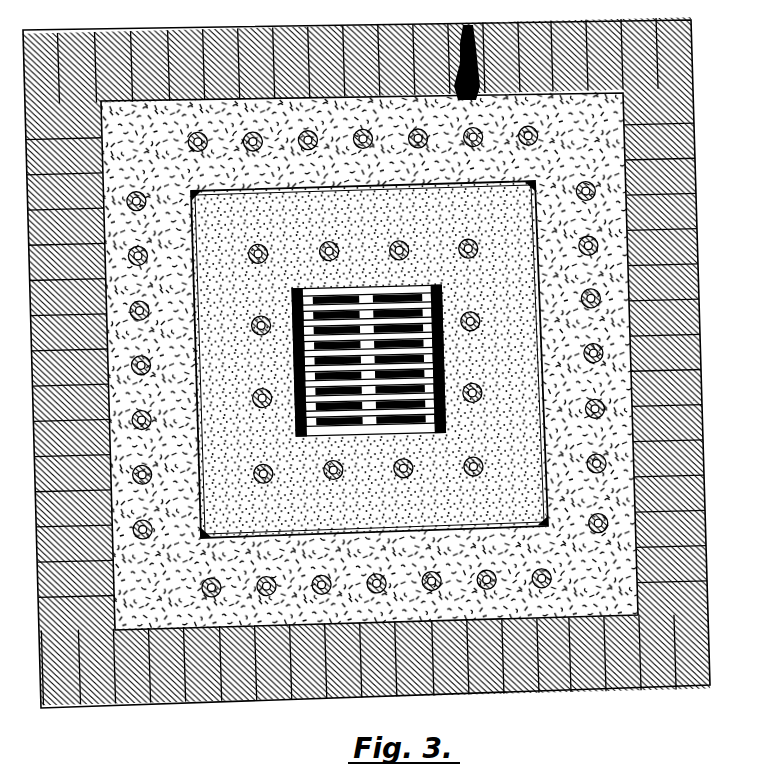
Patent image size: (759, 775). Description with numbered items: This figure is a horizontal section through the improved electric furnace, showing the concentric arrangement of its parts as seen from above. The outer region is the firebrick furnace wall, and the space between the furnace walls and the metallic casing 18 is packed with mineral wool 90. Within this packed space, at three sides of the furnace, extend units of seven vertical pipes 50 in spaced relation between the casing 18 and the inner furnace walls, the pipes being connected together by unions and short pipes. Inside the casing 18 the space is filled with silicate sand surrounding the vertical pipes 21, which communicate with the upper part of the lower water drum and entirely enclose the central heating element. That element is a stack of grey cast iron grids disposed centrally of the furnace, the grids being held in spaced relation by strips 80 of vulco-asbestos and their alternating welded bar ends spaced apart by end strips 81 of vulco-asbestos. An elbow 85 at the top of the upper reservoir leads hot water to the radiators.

The metallic casing 18 is at (220, 175).
The pipes 21 is at (366, 130).
The vertical pipes 50 is at (592, 288).
The strips of vulco-asbestos 80 is at (410, 277).
The end strips of vulco-asbestos 81 is at (433, 420).
The elbow 85 is at (531, 278).
The mineral wool 90 is at (580, 580).